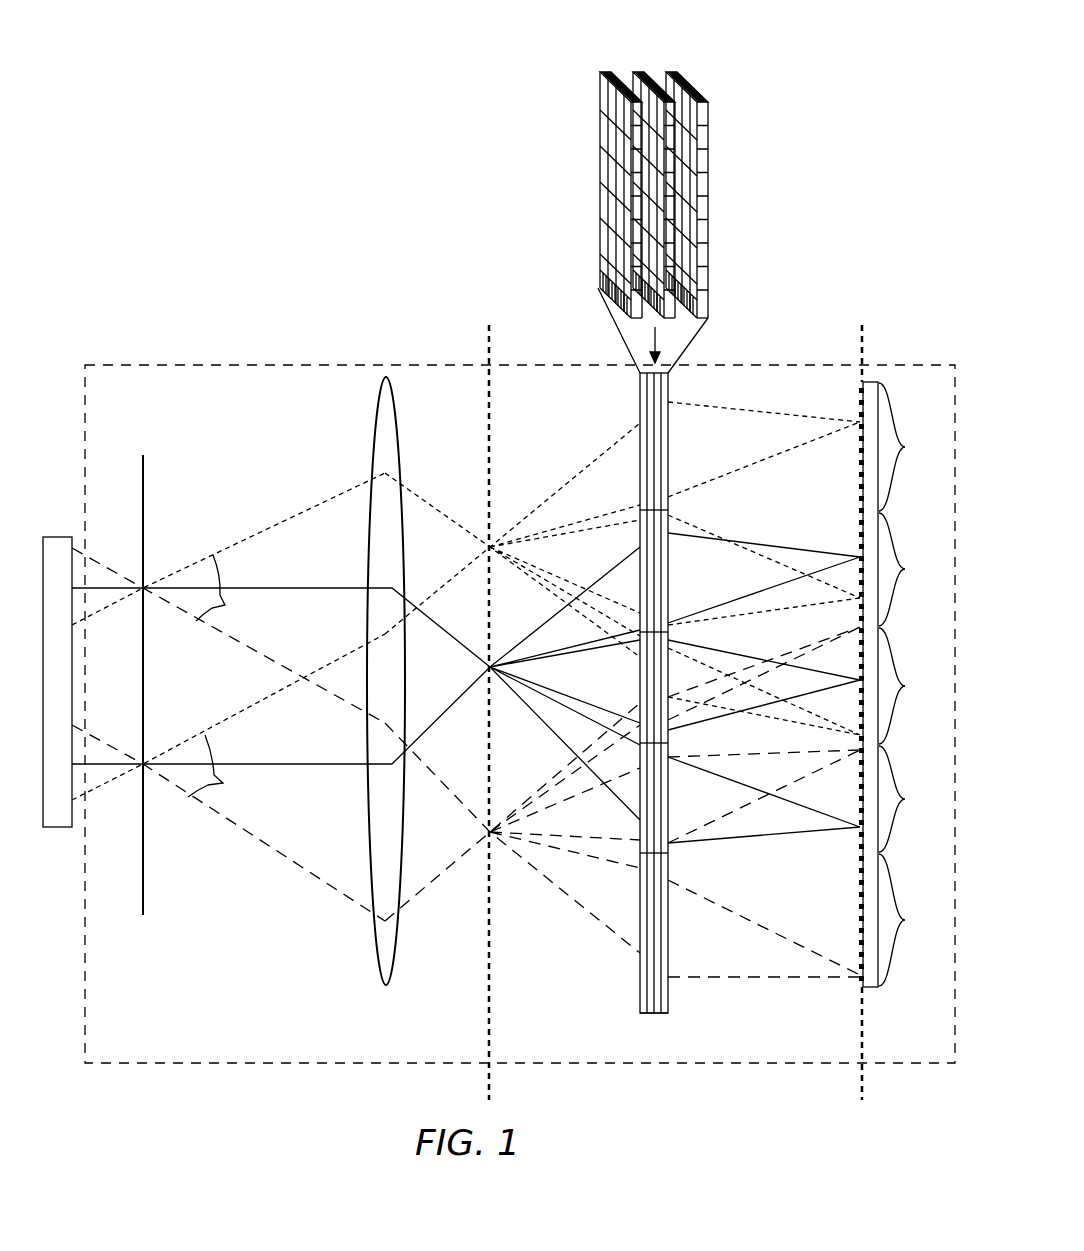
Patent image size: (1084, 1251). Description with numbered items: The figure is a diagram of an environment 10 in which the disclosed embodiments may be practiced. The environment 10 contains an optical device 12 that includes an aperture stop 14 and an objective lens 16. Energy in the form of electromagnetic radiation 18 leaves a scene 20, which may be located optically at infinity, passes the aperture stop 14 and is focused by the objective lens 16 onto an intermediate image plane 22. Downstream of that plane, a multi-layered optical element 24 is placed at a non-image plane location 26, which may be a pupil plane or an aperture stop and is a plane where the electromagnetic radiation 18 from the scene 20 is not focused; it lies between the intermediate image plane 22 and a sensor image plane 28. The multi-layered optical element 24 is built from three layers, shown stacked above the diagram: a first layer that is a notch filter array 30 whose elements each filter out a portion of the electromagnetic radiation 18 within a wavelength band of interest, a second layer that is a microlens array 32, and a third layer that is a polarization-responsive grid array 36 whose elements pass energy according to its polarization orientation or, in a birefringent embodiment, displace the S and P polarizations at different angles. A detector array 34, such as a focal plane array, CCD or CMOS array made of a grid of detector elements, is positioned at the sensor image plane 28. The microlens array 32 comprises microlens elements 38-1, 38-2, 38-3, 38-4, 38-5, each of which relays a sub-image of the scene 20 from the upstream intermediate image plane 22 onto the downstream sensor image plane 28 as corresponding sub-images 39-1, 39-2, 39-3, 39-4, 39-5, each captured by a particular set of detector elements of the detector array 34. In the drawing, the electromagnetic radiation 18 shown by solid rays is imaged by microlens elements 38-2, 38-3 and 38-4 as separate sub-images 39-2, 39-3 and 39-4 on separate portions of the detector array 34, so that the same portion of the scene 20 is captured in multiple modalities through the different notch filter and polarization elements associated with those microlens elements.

The environment 10 is at (333, 163).
The optical device 12 is at (173, 364).
The aperture stop 14 is at (144, 473).
The objective lens 16 is at (378, 413).
The electromagnetic radiation 18 is at (248, 782).
The scene 20 is at (55, 537).
The intermediate image plane 22 is at (490, 410).
The multi-layered optical element 24 is at (683, 57).
The non-image plane location 26 is at (657, 334).
The sensor image plane 28 is at (859, 405).
The notch filter array 30 is at (599, 116).
The microlens array 32 is at (647, 71).
The detector array 34 is at (870, 387).
The polarization-responsive grid array 36 is at (688, 90).
The microlens element 38-1 is at (668, 442).
The microlens element 38-2 is at (668, 572).
The microlens element 38-3 is at (640, 683).
The microlens element 38-4 is at (668, 794).
The microlens element 38-5 is at (668, 936).
The sub-image 39-1 is at (917, 447).
The sub-image 39-2 is at (917, 569).
The sub-image 39-3 is at (917, 686).
The sub-image 39-4 is at (917, 799).
The sub-image 39-5 is at (917, 920).